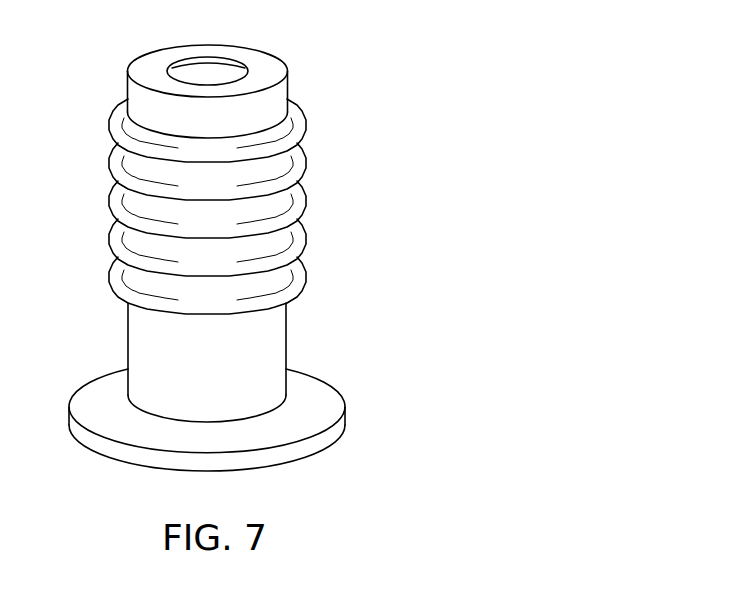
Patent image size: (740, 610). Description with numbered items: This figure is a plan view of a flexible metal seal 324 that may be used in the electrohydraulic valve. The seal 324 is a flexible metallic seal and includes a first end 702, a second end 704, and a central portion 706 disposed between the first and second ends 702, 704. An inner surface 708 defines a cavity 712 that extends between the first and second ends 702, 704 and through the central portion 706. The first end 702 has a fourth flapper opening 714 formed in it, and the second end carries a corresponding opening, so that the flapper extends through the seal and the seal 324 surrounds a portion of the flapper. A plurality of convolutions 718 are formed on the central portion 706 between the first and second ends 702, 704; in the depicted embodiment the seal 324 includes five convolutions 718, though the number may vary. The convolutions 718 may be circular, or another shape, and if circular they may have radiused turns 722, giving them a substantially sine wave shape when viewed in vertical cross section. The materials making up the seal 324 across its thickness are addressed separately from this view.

The seal 324 is at (219, 235).
The first end 702 is at (167, 54).
The second end 704 is at (323, 384).
The central portion 706 is at (95, 97).
The inner surface 708 is at (205, 67).
The cavity 712 is at (233, 36).
The fourth flapper opening 714 is at (180, 73).
The convolutions 718 is at (253, 130).
The radiused turns 722 is at (306, 198).